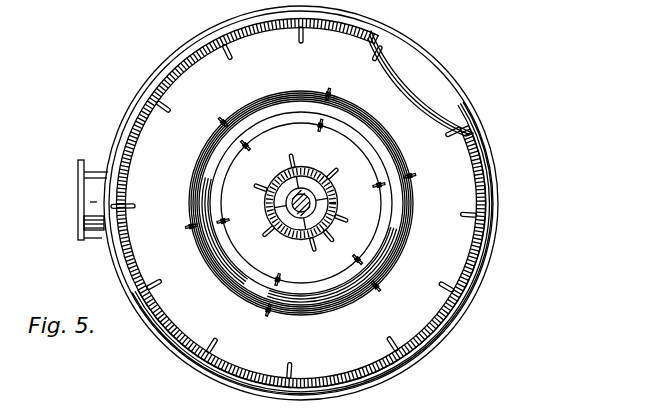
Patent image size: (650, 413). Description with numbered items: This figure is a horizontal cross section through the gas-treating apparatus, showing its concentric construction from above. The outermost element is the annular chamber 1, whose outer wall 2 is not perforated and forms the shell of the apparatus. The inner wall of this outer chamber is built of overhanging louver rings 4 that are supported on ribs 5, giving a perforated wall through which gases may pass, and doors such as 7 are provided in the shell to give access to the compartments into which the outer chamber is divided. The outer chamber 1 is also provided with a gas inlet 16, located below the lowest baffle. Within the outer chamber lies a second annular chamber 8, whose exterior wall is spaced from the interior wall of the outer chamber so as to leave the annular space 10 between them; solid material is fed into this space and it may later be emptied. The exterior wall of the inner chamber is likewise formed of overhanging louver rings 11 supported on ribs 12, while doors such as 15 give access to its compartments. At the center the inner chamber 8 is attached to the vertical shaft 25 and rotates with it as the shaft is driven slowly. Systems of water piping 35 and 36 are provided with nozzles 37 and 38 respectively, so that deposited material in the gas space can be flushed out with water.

The annular chamber 1 is at (247, 76).
The outer wall 2 is at (482, 166).
The louver rings 4 is at (396, 150).
The ribs 5 is at (334, 91).
The doors 7 is at (446, 86).
The annular chamber 8 is at (283, 155).
The annular space 10 is at (202, 184).
The louver rings 11 is at (391, 207).
The ribs 12 is at (380, 185).
The doors 15 is at (277, 179).
The gas inlet 16 is at (78, 196).
The vertical shaft 25 is at (266, 200).
The water piping system 35 is at (497, 216).
The water piping system 36 is at (329, 238).
The nozzles 37 is at (478, 213).
The nozzles 38 is at (302, 244).